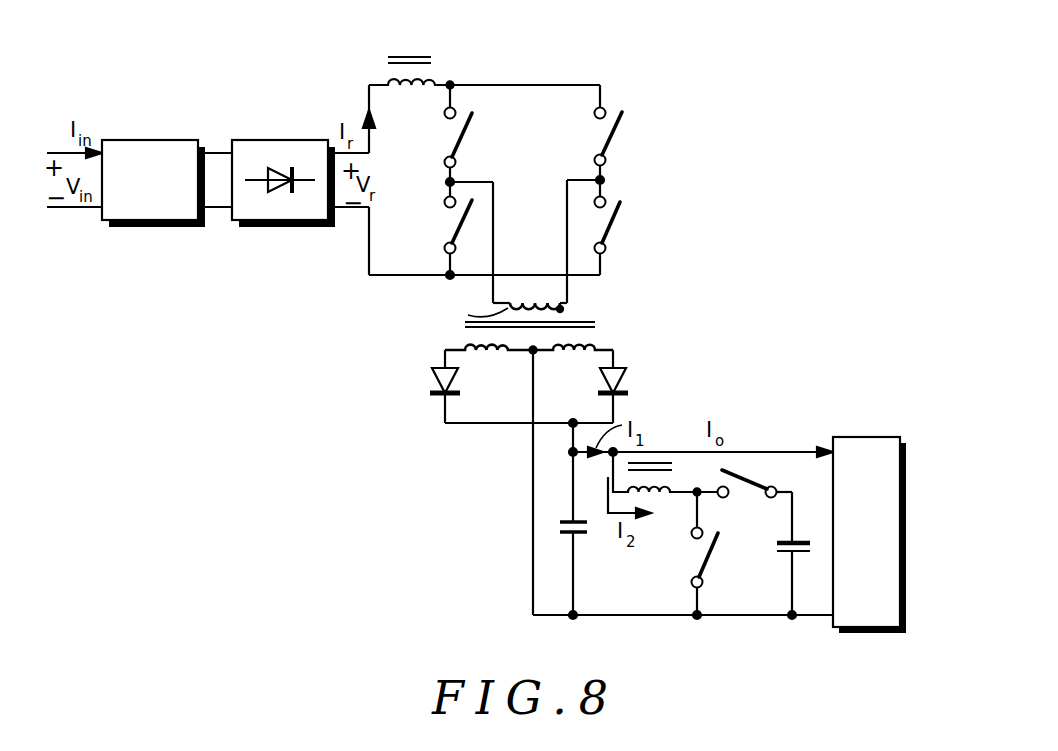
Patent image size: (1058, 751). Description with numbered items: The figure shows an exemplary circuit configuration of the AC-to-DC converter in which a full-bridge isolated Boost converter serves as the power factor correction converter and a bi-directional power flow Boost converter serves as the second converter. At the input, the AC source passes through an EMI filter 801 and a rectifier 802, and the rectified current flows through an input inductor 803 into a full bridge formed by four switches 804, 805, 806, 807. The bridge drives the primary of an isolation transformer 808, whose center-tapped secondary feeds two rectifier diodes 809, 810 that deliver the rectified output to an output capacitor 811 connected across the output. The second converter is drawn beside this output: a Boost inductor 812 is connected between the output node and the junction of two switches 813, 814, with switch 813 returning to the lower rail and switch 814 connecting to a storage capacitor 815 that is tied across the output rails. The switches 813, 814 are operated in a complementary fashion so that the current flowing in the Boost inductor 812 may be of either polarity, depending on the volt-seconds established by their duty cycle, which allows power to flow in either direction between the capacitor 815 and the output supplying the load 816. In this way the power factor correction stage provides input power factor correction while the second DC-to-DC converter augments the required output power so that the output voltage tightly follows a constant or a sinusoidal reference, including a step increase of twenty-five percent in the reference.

The EMI filter 801 is at (120, 140).
The rectifier 802 is at (250, 140).
The input inductor Lin 803 is at (413, 57).
The switch S1 804 is at (456, 142).
The switch S2 805 is at (602, 142).
The switch S3 806 is at (620, 212).
The switch S4 807 is at (457, 238).
The transformer T 808 is at (612, 323).
The rectifier diode D121 809 is at (435, 368).
The rectifier diode D122 810 is at (623, 368).
The output capacitor Co 811 is at (577, 535).
The Boost inductor Lx 812 is at (668, 478).
The switch Sx1 813 is at (698, 558).
The switch Sx2 814 is at (766, 483).
The capacitor Cs 815 is at (785, 542).
The load 816 is at (845, 435).